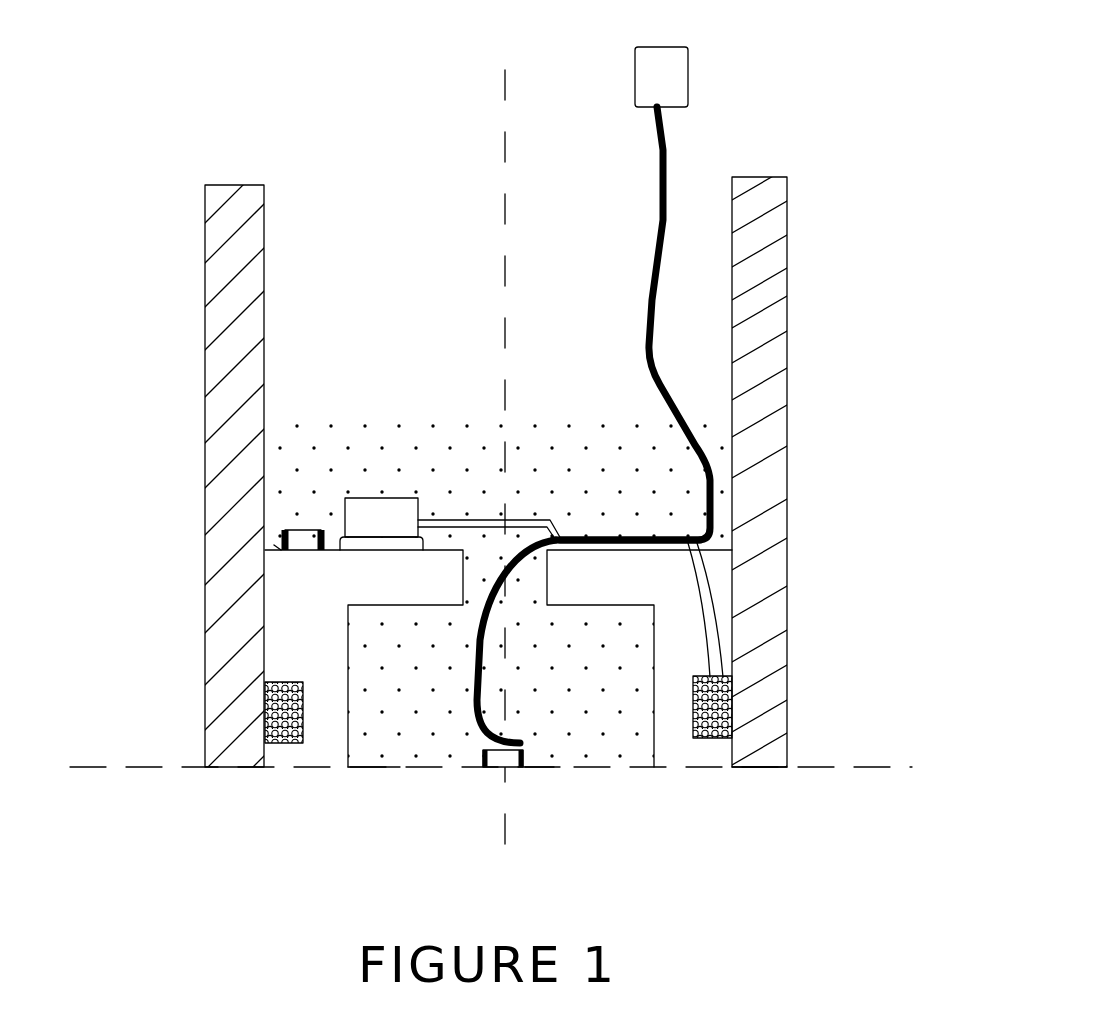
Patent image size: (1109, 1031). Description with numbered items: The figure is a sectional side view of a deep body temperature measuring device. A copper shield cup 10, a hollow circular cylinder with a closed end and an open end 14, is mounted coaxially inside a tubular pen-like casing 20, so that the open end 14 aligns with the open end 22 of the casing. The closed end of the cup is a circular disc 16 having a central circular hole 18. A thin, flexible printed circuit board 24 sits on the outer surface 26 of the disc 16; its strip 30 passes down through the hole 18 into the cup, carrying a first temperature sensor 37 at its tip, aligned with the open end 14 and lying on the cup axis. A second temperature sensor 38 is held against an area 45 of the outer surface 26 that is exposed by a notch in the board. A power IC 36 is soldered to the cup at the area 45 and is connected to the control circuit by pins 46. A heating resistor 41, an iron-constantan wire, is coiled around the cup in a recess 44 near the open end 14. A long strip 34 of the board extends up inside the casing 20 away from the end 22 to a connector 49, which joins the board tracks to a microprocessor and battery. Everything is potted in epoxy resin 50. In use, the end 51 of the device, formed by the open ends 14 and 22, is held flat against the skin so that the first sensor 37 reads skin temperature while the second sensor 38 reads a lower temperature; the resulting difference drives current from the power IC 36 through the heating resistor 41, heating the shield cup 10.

The copper shield cup 10 is at (712, 750).
The open end 14 is at (535, 770).
The circular disc 16 is at (340, 587).
The central circular hole 18 is at (528, 578).
The pen-like casing 20 is at (755, 207).
The open end 22 is at (752, 763).
The printed circuit board 24 is at (637, 530).
The outer surface 26 is at (272, 548).
The strip 30 is at (477, 713).
The long strip 34 is at (660, 270).
The power IC 36 is at (360, 517).
The first temperature sensor 37 is at (490, 770).
The second temperature sensor 38 is at (282, 530).
The heating resistor 41 is at (693, 740).
The recess 44 is at (733, 665).
The area 45 is at (343, 552).
The pins 46 is at (437, 518).
The connector 49 is at (676, 68).
The epoxy resin 50 is at (353, 445).
The end 51 is at (378, 770).